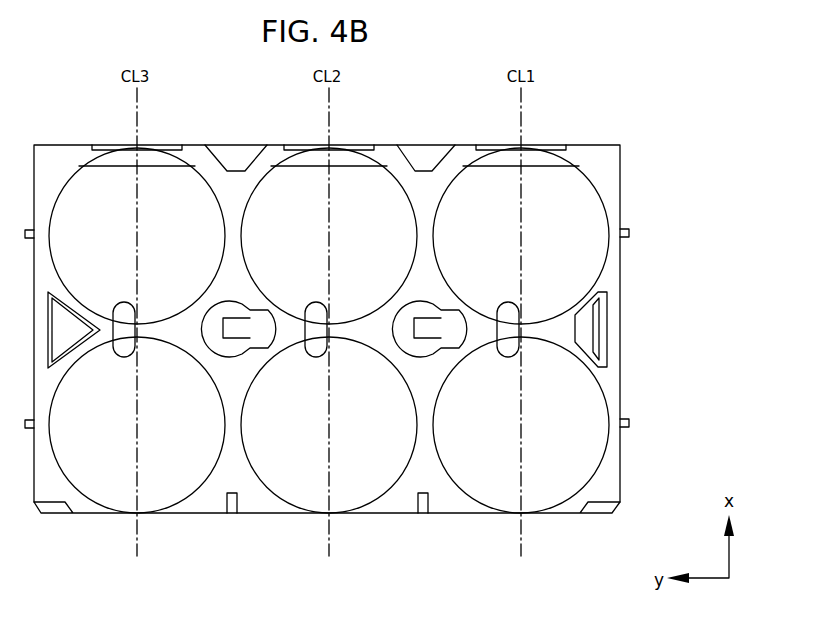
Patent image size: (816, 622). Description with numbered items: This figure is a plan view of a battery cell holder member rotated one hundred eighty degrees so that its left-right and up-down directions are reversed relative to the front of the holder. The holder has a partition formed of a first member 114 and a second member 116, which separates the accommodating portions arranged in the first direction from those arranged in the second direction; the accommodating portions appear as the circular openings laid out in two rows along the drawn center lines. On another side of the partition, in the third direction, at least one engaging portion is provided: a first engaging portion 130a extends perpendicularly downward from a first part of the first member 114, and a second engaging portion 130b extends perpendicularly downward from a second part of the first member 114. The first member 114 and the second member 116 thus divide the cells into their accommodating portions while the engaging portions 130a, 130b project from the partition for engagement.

The second member 116 is at (428, 232).
The first member 114 is at (540, 330).
The first engaging portion 130a is at (453, 335).
The second engaging portion 130b is at (260, 333).